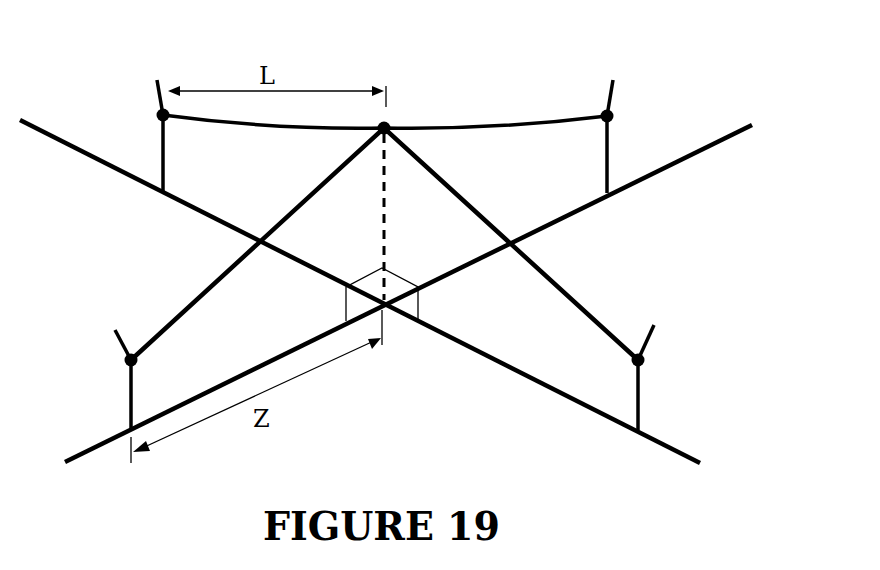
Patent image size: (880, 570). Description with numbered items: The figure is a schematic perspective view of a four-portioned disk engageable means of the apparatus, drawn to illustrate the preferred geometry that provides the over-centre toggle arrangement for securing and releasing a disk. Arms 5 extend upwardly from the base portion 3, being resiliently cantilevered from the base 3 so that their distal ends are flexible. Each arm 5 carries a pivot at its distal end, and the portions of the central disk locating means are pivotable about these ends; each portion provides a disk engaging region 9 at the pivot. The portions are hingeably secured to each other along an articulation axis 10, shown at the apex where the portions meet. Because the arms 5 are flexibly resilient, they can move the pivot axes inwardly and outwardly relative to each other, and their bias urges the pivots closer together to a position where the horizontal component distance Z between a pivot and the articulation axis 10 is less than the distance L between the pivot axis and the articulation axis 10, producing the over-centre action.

The base portion 3 is at (200, 218).
The arms 5 is at (162, 158).
The disk engaging region 9 is at (158, 88).
The articulation axis 10 is at (388, 122).